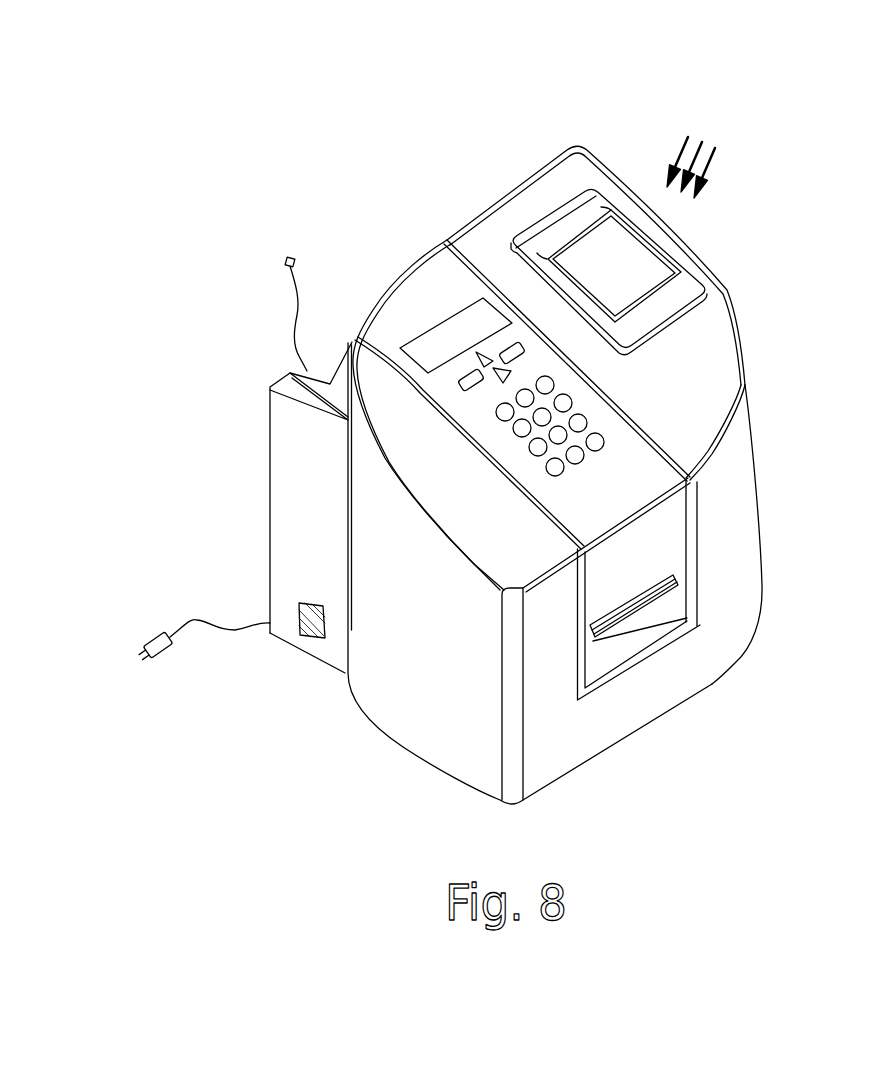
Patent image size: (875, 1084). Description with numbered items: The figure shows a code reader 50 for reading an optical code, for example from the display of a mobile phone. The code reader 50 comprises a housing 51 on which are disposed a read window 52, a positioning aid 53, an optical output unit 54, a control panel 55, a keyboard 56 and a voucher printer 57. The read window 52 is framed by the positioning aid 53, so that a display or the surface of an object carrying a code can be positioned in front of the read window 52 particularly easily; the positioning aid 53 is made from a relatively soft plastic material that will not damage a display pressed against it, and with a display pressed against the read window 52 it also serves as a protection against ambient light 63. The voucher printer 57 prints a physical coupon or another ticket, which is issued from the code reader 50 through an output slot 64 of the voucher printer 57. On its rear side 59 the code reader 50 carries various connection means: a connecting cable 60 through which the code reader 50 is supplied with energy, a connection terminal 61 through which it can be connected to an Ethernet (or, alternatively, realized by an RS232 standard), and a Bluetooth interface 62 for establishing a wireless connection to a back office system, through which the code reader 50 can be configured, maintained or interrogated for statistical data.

The code reader 50 is at (347, 775).
The housing 51 is at (760, 512).
The read window 52 is at (628, 275).
The positioning aid 53 is at (735, 259).
The optical output unit 54 is at (455, 310).
The control panel 55 is at (450, 390).
The keyboard 56 is at (600, 409).
The voucher printer 57 is at (603, 650).
The rear side 59 is at (295, 561).
The connecting cable 60 is at (195, 618).
The connection terminal 61 is at (293, 290).
The Bluetooth interface 62 is at (300, 637).
The ambient light 63 is at (677, 147).
The output slot 64 is at (617, 607).